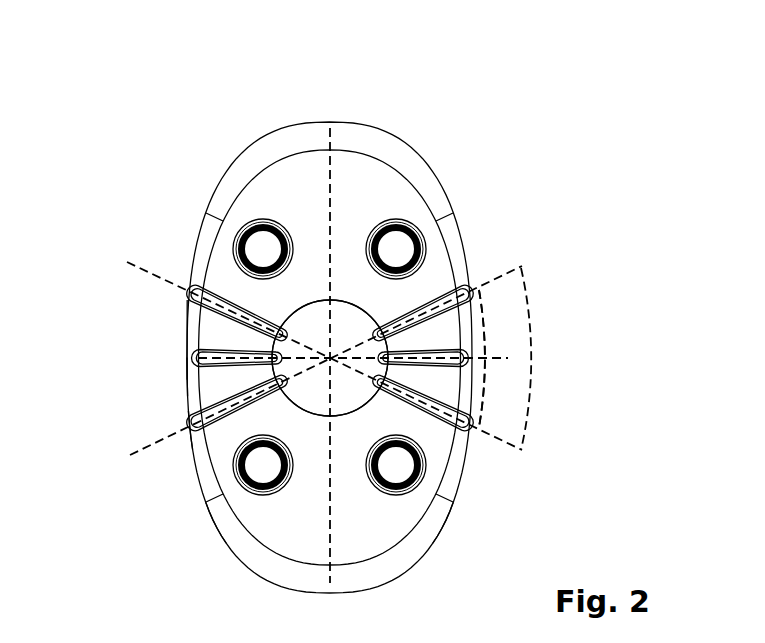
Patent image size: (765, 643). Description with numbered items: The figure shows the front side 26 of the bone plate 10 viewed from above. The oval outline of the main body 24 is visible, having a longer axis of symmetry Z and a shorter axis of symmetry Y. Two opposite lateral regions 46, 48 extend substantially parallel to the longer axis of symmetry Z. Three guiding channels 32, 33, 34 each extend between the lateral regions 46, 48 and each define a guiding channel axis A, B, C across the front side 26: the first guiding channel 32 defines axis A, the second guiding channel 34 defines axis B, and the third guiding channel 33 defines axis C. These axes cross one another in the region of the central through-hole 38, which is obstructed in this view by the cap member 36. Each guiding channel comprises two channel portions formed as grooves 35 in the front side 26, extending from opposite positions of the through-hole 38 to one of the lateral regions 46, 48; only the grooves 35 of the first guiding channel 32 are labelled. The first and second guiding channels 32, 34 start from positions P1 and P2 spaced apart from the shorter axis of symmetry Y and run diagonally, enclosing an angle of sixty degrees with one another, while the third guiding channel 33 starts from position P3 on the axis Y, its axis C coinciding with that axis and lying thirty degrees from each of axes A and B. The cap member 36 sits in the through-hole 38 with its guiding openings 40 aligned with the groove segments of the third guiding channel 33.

The bone plate 10 is at (402, 126).
The main body 24 is at (212, 136).
The front side 26 is at (342, 245).
The first guiding channel 32 is at (176, 311).
The third guiding channel 33 is at (175, 373).
The second guiding channel 34 is at (154, 460).
The groove 35 is at (224, 290).
The cap member 36 is at (316, 405).
The central through-hole 38 is at (352, 428).
The guiding opening 40 is at (245, 300).
The lateral region 46 is at (196, 546).
The lateral region 48 is at (464, 546).
The position P1 is at (192, 290).
The position P2 is at (192, 416).
The position P3 is at (196, 358).
The shorter axis of symmetry Y is at (198, 358).
The longer axis of symmetry Z is at (328, 150).
The guiding channel axis A is at (442, 411).
The guiding channel axis B is at (441, 305).
The guiding channel axis C is at (518, 358).